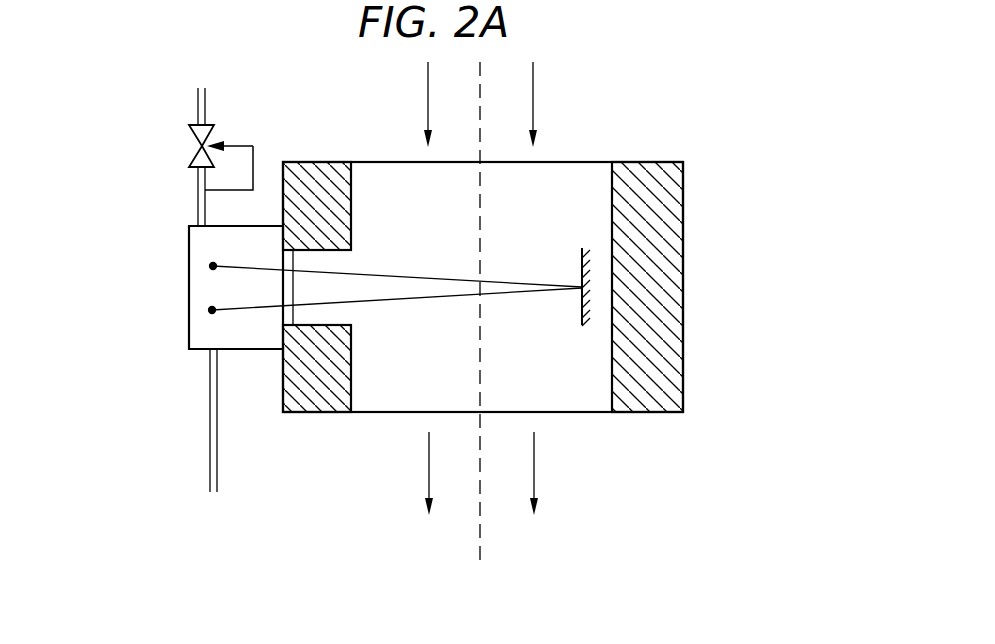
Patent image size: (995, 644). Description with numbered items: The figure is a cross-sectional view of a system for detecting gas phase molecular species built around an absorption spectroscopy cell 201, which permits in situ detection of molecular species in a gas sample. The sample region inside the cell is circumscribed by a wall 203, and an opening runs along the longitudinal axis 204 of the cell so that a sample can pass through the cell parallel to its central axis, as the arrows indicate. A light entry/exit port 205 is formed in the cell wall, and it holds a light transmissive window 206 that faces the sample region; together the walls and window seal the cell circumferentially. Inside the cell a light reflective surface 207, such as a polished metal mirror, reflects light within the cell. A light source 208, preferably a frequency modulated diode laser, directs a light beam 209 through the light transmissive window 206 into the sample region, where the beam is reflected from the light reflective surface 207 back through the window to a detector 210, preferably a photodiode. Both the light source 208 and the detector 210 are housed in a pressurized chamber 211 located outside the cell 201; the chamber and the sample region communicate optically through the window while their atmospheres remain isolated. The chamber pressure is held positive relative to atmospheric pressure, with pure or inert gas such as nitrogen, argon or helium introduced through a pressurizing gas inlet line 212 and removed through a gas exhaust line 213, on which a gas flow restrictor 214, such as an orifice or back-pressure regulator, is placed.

The absorption spectroscopy cell 201 is at (372, 162).
The wall 203 is at (684, 287).
The longitudinal axis 204 is at (484, 558).
The light entry/exit port 205 is at (343, 260).
The light transmissive window 206 is at (293, 317).
The light reflective surface 207 is at (580, 311).
The light source 208 is at (209, 266).
The light beam 209 is at (436, 277).
The detector 210 is at (208, 310).
The pressurized chamber 211 is at (242, 352).
The pressurizing gas inlet line 212 is at (210, 462).
The gas exhaust line 213 is at (198, 203).
The gas flow restrictor 214 is at (200, 146).